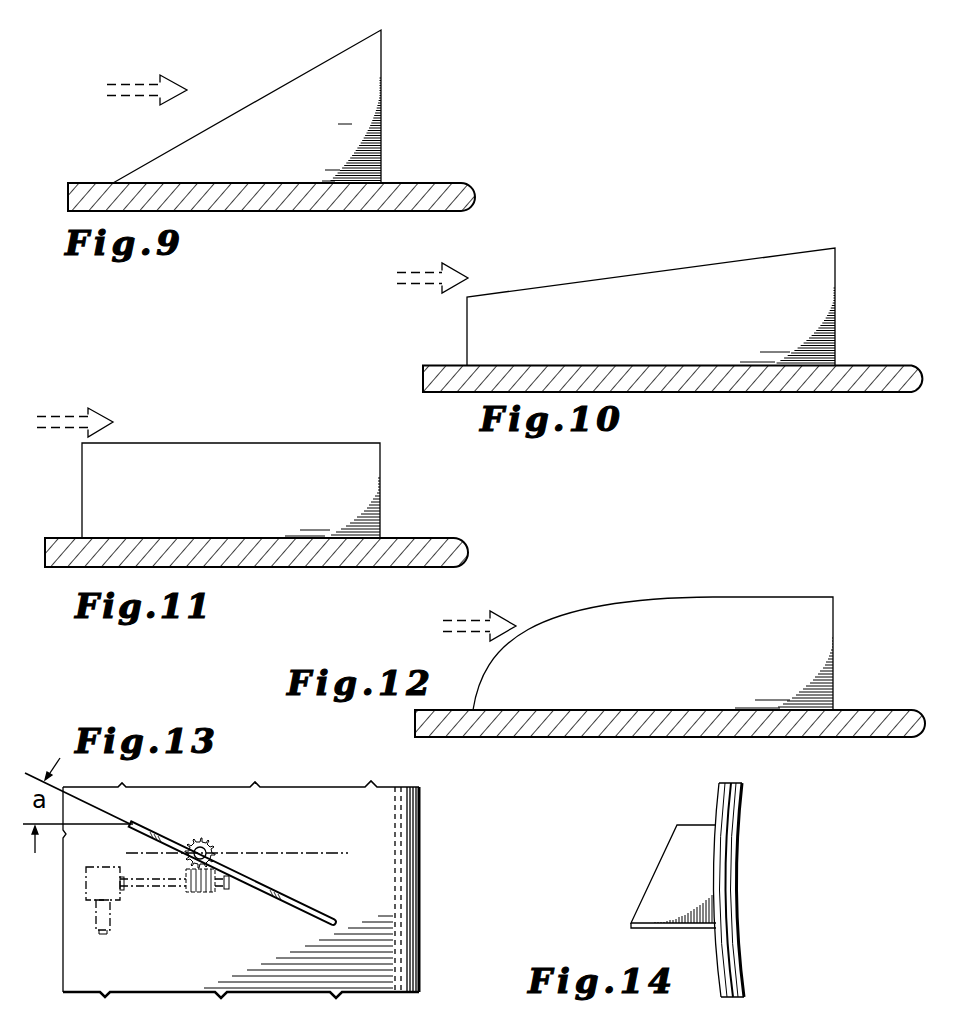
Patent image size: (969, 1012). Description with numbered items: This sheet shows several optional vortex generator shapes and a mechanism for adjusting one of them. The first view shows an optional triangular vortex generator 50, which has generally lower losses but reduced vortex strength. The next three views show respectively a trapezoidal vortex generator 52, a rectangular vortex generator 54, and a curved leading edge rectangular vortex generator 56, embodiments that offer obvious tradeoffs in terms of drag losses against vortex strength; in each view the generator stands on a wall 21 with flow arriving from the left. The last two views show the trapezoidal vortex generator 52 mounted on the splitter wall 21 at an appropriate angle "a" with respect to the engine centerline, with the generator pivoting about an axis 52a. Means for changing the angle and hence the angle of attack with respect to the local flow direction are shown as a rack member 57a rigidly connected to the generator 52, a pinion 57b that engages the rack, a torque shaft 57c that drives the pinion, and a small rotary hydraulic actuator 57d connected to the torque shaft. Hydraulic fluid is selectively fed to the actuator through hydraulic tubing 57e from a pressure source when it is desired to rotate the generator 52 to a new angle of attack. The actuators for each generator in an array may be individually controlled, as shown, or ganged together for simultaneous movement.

In FIG. 9, the wall/ship hull plate 21 is at (468, 185).
In FIG. 10, the wall/ship hull plate 21 is at (912, 367).
In FIG. 11, the wall/ship hull plate 21 is at (468, 543).
In FIG. 12, the wall/ship hull plate 21 is at (905, 711).
In FIG. 13, the wall/ship hull plate 21 is at (420, 887).
In FIG. 14, the wall/ship hull plate 21 is at (728, 938).
In FIG. 9, the triangular vortex generator 50 is at (383, 82).
In FIG. 10, the trapezoidal vortex generator 52 is at (837, 293).
In FIG. 13, the trapezoidal vortex generator 52 is at (250, 879).
In FIG. 14, the trapezoidal vortex generator 52 is at (650, 885).
In FIG. 13, the pivot axis of fin 52a is at (323, 845).
In FIG. 11, the rectangular vortex generator 54 is at (382, 483).
In FIG. 12, the curved leading edge rectangular vortex generator 56 is at (835, 621).
In FIG. 13, the rack member 57a is at (240, 822).
In FIG. 13, the pinion 57b is at (210, 898).
In FIG. 13, the torque shaft 57c is at (157, 888).
In FIG. 13, the rotary hydraulic actuator 57d is at (123, 903).
In FIG. 13, the hydraulic tubing 57e is at (112, 925).